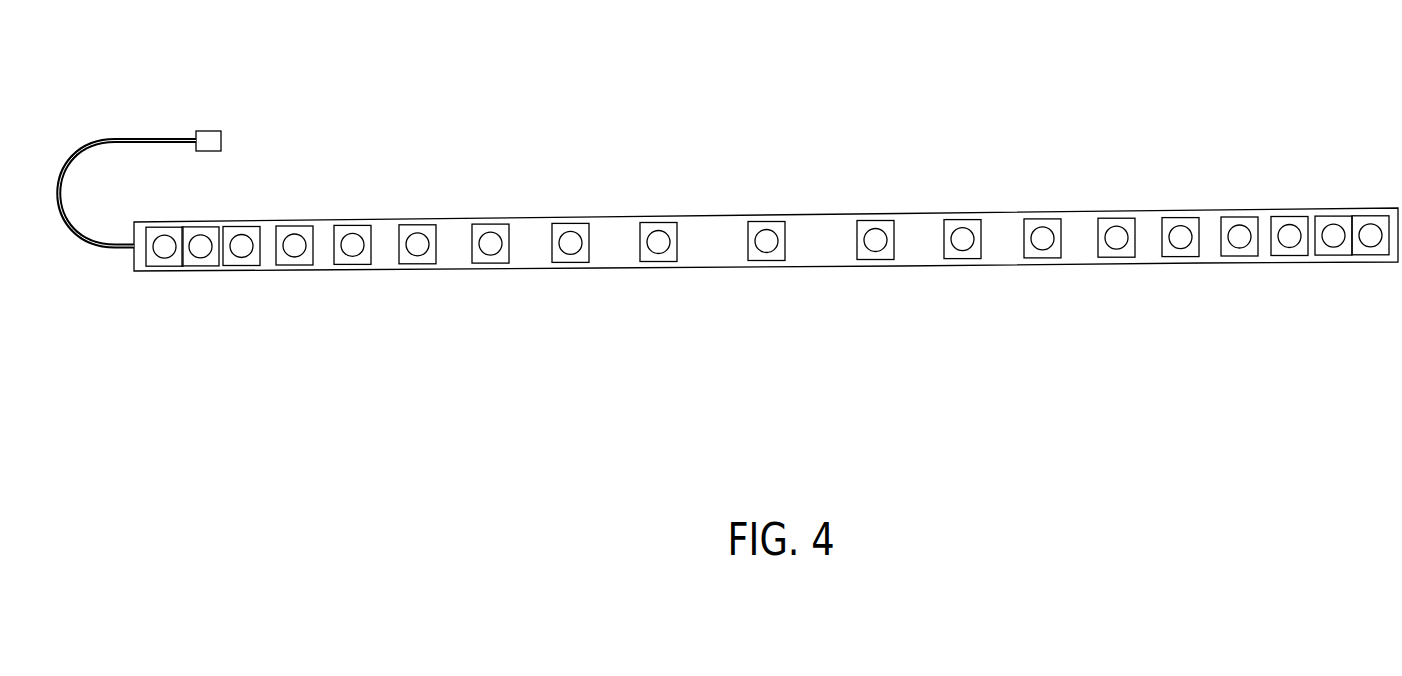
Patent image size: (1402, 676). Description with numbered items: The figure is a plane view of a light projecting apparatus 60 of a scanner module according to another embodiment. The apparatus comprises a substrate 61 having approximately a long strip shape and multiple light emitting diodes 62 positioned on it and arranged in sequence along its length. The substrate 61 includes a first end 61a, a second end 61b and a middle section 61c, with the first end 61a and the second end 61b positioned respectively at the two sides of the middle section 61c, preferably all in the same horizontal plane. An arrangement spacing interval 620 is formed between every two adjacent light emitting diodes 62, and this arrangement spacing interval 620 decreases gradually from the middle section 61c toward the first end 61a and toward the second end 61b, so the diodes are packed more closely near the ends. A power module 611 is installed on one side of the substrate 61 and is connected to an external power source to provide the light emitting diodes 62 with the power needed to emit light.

The light projecting apparatus 60 is at (728, 216).
The substrate 61 is at (766, 253).
The first end 61a is at (1338, 282).
The second end 61b is at (229, 291).
The middle section 61c is at (762, 287).
The power module 611 is at (212, 138).
The light emitting diodes 62 is at (497, 230).
The arrangement spacing interval 620 is at (268, 232).